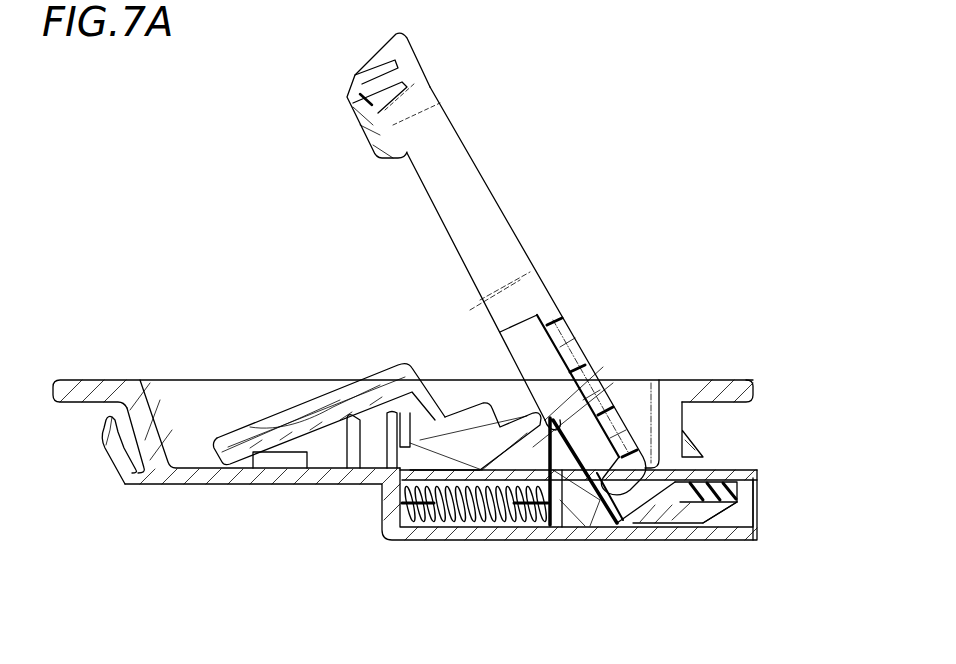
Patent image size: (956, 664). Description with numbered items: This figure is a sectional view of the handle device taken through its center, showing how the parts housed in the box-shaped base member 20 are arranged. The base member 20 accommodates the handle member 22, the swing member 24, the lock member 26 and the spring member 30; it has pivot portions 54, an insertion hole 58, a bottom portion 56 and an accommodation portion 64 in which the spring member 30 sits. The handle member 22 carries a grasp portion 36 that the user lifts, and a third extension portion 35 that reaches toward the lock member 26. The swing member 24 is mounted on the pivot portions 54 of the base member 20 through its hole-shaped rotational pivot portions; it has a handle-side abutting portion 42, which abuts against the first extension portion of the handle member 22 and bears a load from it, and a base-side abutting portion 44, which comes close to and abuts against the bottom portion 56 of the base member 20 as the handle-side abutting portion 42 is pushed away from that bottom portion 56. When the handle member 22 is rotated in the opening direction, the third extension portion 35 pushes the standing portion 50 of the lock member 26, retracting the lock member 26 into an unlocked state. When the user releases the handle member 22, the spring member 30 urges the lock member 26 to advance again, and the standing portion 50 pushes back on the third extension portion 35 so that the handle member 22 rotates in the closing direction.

The base member 20 is at (100, 378).
The handle member 22 is at (497, 185).
The swing member 24 is at (401, 362).
The lock member 26 is at (732, 484).
The spring member 30 is at (452, 524).
The third extension portion 35 is at (626, 503).
The grasp portion 36 is at (415, 48).
The handle-side abutting portion 42 is at (510, 447).
The base-side abutting portion 44 is at (222, 440).
The standing portion 50 is at (578, 435).
The pivot portion 54 is at (362, 470).
The bottom portion 56 is at (226, 486).
The insertion hole 58 is at (674, 416).
The accommodation portion 64 is at (752, 496).